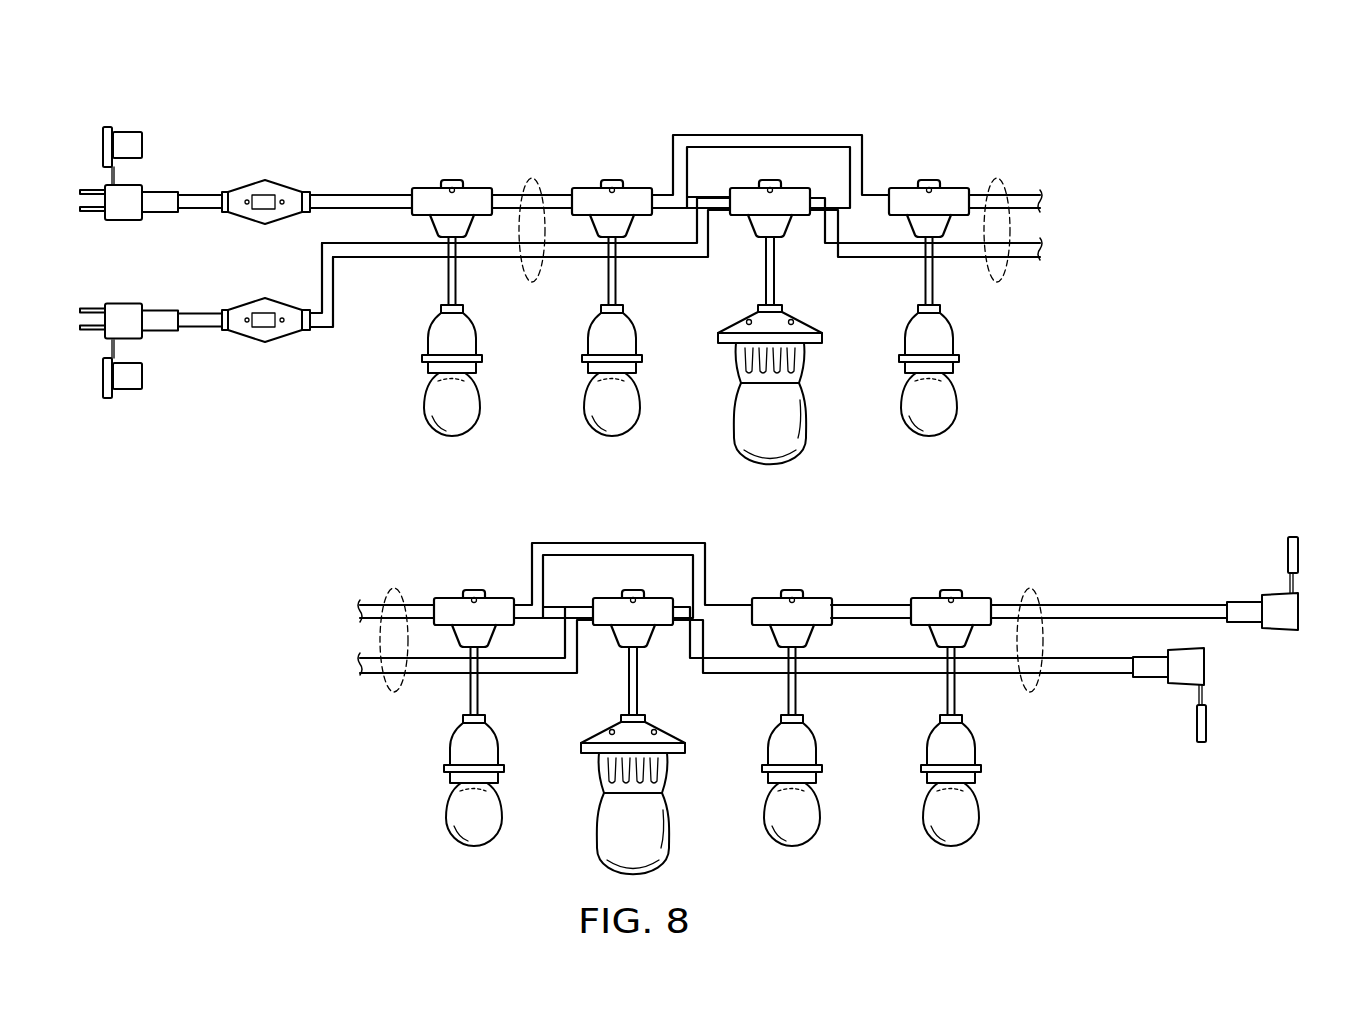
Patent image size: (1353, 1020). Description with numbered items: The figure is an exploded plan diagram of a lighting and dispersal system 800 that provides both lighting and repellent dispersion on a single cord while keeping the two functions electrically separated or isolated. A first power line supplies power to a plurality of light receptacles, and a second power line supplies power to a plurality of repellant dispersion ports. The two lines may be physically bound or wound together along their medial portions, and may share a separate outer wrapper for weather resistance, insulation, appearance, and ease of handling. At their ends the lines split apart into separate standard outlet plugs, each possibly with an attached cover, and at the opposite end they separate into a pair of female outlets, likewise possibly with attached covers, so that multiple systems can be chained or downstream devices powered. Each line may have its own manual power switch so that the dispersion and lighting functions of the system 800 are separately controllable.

The lighting and dispersal system 800 is at (916, 78).